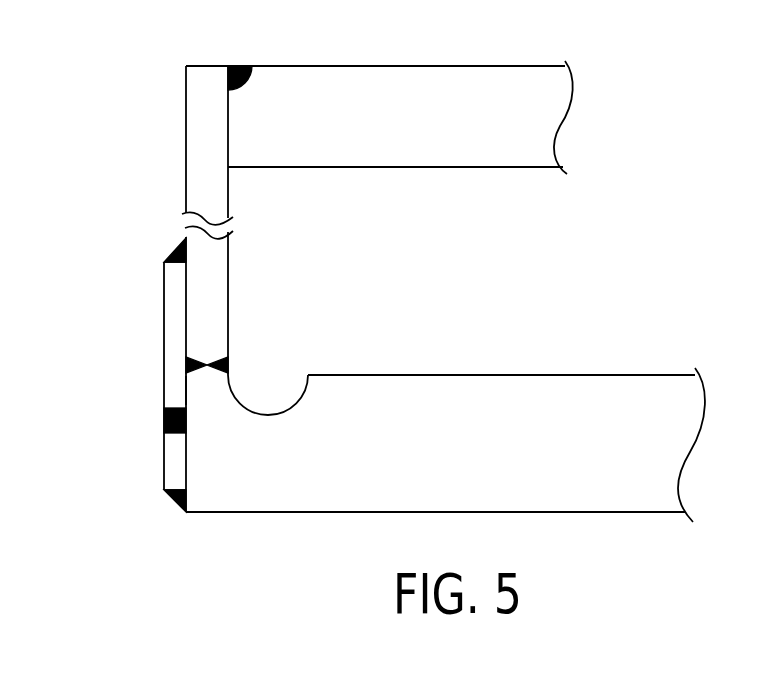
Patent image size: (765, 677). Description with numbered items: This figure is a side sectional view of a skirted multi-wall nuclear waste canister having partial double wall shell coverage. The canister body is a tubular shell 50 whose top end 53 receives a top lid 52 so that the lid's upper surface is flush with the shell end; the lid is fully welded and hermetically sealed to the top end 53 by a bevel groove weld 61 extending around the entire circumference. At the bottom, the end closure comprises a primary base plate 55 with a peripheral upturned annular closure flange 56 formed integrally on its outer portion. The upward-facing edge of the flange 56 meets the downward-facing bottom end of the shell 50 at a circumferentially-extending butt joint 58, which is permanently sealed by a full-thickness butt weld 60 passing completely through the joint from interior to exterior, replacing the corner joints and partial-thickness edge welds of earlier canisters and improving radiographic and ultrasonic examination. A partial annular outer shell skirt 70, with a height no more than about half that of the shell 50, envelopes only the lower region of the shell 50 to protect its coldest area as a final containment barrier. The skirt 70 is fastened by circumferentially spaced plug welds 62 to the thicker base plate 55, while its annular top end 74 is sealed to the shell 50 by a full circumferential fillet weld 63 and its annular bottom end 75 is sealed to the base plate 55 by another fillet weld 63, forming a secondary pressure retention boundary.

The tubular shell 50 is at (185, 156).
The top lid 52 is at (320, 152).
The top end 53 is at (197, 66).
The primary base plate 55 is at (578, 401).
The peripheral upturned annular closure flange 56 is at (198, 386).
The butt joint 58 is at (233, 358).
The butt weld 60 is at (197, 365).
The groove weld 61 is at (239, 66).
The plug welds 62 is at (165, 418).
The fillet weld 63 is at (176, 245).
The outer shell skirt 70 is at (163, 355).
The top end of shell skirt 74 is at (176, 265).
The bottom end of skirt 75 is at (173, 491).